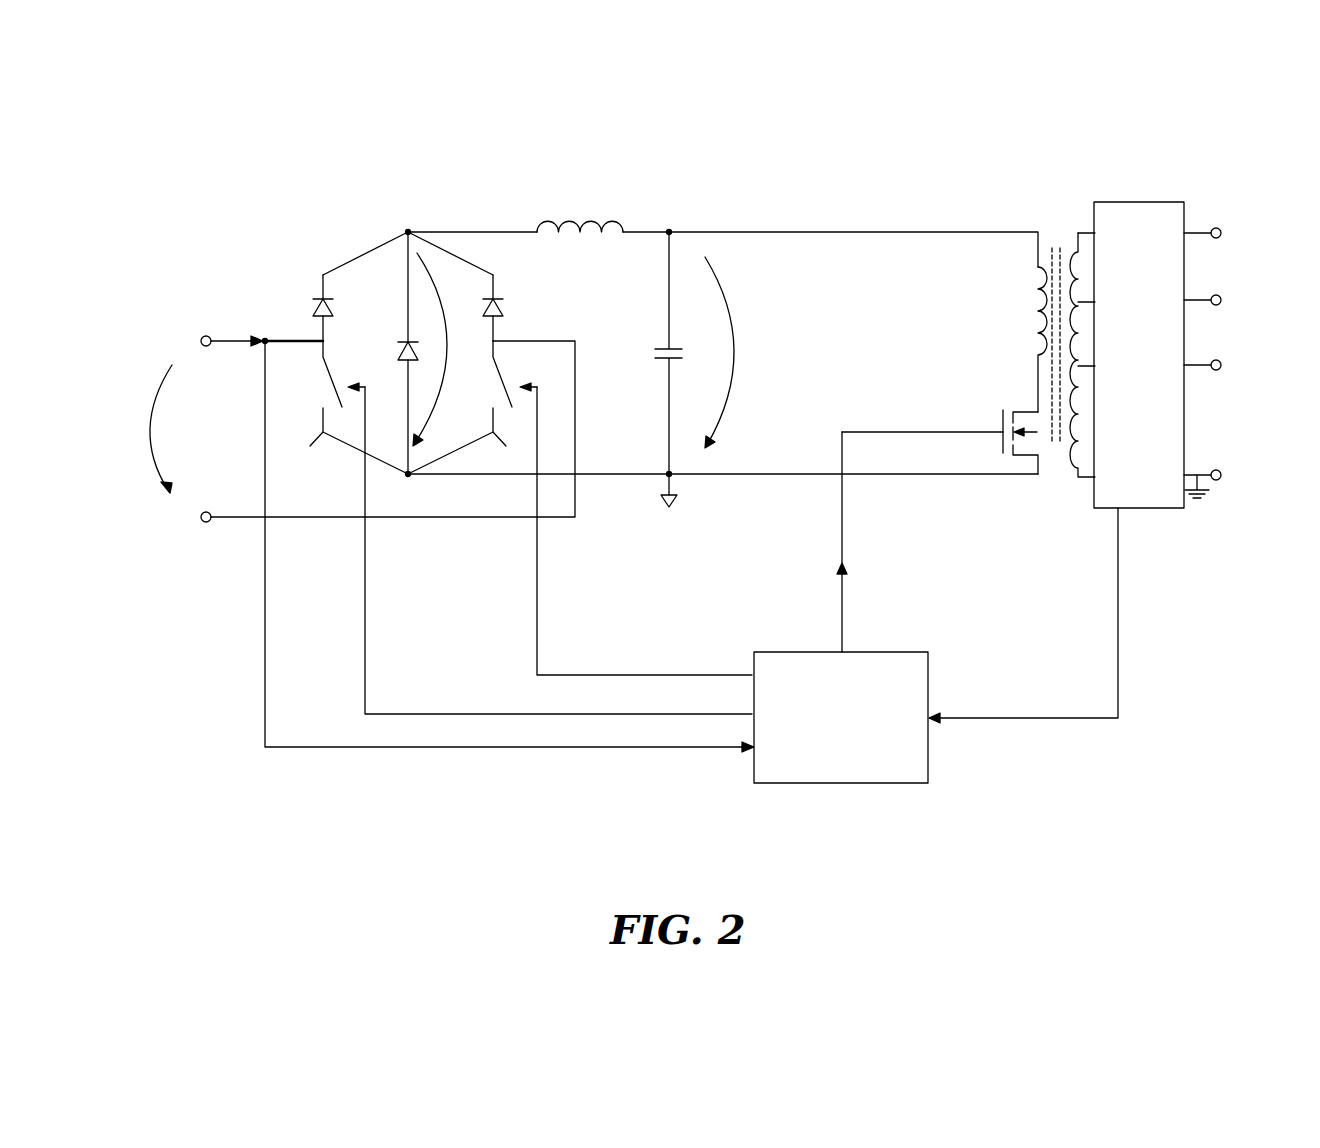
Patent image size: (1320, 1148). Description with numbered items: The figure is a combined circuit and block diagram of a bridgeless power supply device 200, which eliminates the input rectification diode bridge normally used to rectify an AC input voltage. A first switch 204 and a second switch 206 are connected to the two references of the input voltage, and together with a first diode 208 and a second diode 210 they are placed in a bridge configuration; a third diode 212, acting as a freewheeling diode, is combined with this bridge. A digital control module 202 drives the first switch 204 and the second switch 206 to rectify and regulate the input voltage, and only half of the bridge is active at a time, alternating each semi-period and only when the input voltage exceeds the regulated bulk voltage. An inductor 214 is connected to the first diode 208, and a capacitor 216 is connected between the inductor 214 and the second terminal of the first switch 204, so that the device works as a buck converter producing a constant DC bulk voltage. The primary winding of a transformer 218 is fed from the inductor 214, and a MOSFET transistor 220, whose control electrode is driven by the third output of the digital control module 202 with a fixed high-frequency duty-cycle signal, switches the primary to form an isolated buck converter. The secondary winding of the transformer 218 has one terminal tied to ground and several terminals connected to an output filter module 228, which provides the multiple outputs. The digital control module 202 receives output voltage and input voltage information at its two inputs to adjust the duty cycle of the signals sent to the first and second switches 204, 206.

The bridgeless power supply device 200 is at (975, 146).
The digital control module 202 is at (841, 717).
The first switch 204 is at (507, 527).
The second switch 206 is at (622, 508).
The first diode 208 is at (323, 290).
The second diode 210 is at (493, 292).
The third diode 212 is at (407, 332).
The inductor 214 is at (613, 222).
The capacitor 216 is at (670, 333).
The transformer 218 is at (1042, 287).
The MOSFET transistor 220 is at (1033, 410).
The output filter module 228 is at (1098, 461).